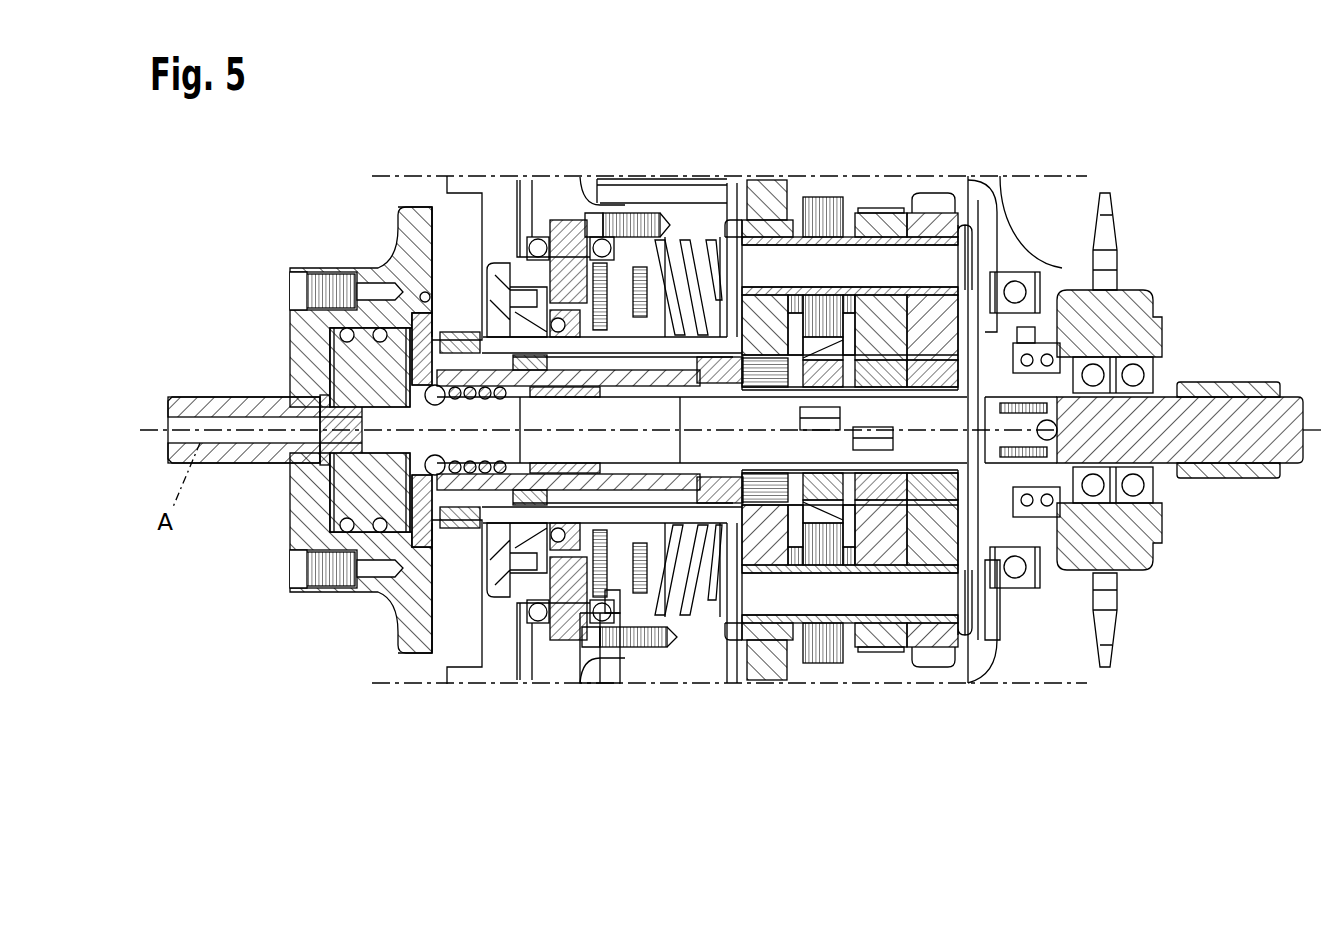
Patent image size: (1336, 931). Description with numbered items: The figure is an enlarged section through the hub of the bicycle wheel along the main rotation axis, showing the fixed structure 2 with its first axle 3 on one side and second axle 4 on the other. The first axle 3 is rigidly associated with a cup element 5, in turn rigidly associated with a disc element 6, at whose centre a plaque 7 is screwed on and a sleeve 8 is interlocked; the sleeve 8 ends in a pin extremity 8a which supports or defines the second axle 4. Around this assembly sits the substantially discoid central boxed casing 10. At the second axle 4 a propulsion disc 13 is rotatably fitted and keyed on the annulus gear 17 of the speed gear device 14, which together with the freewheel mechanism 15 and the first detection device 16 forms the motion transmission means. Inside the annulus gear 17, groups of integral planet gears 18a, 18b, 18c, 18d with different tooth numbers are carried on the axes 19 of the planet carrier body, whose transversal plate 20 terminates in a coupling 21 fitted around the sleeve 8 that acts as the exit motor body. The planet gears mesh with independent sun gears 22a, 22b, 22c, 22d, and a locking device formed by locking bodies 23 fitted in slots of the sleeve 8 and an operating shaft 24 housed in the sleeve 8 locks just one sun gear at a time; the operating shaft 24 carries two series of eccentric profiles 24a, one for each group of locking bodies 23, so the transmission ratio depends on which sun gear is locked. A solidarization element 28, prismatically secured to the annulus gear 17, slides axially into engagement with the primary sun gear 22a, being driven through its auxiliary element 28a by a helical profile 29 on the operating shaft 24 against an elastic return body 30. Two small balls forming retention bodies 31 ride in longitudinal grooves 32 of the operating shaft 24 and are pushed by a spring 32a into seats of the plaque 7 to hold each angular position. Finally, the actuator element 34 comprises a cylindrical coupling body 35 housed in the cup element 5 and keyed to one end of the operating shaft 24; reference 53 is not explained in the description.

The fixed structure 2 is at (210, 388).
The first axle 3 is at (190, 397).
The second axle 4 is at (1250, 384).
The cup element 5 is at (318, 268).
The disc element 6 is at (432, 207).
The plaque 7 is at (410, 372).
The sleeve 8 is at (477, 350).
The pin extremity 8a is at (1280, 462).
The central boxed casing 10 is at (1008, 218).
The propulsion disc 13 is at (1107, 197).
The speed gear device 14 is at (992, 600).
The freewheel mechanism 15 is at (474, 545).
The first detection device 16 is at (588, 208).
The annulus gear 17 is at (960, 615).
The primary planet gear 18a is at (920, 645).
The secondary planet gear 18b is at (860, 640).
The tertiary planet gear 18c is at (820, 645).
The quaternary planet gear 18d is at (770, 645).
The axes 19 is at (750, 600).
The transversal plate 20 is at (720, 605).
The coupling 21 is at (609, 595).
The primary sun gear 22a is at (943, 298).
The secondary sun gear 22b is at (876, 298).
The tertiary sun gear 22c is at (824, 298).
The quaternary sun gear 22d is at (762, 280).
The locking bodies 23 is at (790, 298).
The operating shaft 24 is at (583, 443).
The eccentric profiles 24a is at (985, 455).
The solidarization element 28 is at (998, 338).
The auxiliary element 28a is at (1022, 372).
The helical profile 29 is at (1060, 410).
The elastic return body 30 is at (1050, 335).
The retention bodies 31 is at (353, 400).
The longitudinal grooves 32 is at (410, 447).
The spring 32a is at (417, 368).
The actuator element 34 is at (328, 503).
The coupling body 35 is at (340, 520).
The cover 53 is at (682, 185).